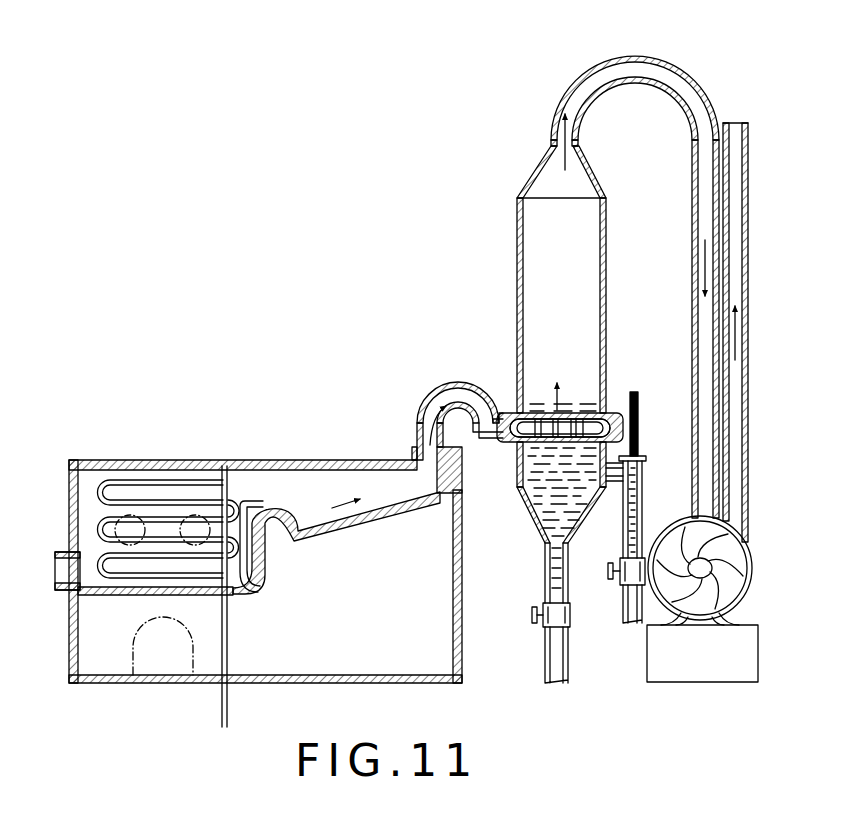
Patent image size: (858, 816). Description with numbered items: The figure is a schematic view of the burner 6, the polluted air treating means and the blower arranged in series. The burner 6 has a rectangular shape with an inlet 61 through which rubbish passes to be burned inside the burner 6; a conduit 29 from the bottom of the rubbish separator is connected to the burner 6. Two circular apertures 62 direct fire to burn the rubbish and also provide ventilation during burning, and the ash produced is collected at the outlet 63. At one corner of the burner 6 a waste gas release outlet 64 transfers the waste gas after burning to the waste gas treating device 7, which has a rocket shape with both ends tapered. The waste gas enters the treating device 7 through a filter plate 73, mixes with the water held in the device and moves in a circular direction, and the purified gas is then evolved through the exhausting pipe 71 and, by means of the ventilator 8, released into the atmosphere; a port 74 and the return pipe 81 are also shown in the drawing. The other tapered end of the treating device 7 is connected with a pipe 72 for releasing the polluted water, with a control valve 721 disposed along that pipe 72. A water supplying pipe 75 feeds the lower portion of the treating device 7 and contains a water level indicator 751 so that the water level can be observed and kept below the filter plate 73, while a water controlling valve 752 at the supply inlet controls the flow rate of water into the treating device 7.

The burner 6 is at (253, 446).
The inlet 61 is at (57, 571).
The circular apertures 62 is at (130, 528).
The outlet 63 is at (170, 656).
The conduit 29 is at (228, 668).
The waste gas release outlet 64 is at (458, 393).
The waste gas treating device 7 is at (586, 318).
The exhausting pipe 71 is at (623, 66).
The pipe 72 is at (548, 577).
The control valve 721 is at (547, 613).
The filter plate 73 is at (523, 426).
The port 74 is at (603, 424).
The water supplying pipe 75 is at (635, 522).
The level indicator 751 is at (637, 430).
The water controlling valve 752 is at (616, 573).
The ventilator 8 is at (740, 570).
The return pipe 81 is at (738, 283).